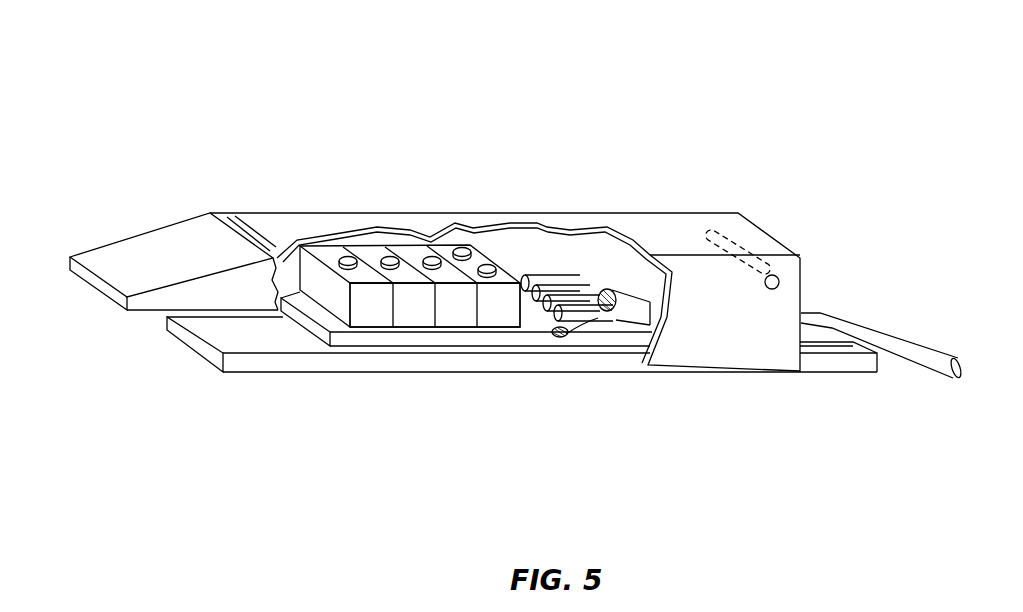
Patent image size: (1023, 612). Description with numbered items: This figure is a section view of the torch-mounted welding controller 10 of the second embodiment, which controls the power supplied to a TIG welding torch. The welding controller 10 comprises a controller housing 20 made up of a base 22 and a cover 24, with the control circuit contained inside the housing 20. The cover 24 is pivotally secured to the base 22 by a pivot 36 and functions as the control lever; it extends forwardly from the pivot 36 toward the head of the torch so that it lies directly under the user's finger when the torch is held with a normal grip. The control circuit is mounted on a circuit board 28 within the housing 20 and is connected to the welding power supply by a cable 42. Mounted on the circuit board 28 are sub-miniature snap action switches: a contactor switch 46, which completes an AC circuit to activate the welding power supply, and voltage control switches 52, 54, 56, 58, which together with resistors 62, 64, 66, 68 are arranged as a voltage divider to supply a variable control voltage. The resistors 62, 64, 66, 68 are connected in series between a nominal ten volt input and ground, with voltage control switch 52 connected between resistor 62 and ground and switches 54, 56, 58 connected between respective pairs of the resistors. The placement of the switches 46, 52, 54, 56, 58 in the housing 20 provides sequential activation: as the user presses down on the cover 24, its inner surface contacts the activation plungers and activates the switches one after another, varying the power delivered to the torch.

The welding controller 10 is at (314, 116).
The controller housing 20 is at (673, 213).
The base 22 is at (597, 360).
The cover 24 is at (158, 250).
The circuit board 28 is at (332, 318).
The pivot 36 is at (786, 278).
The cable 42 is at (903, 356).
The contactor switch 46 is at (500, 307).
The voltage control switch 52 is at (478, 252).
The voltage control switch 54 is at (457, 308).
The voltage control switch 56 is at (405, 300).
The voltage control switch 58 is at (363, 300).
The resistor 62 is at (566, 273).
The resistor 64 is at (550, 283).
The resistor 66 is at (561, 293).
The resistor 68 is at (571, 303).